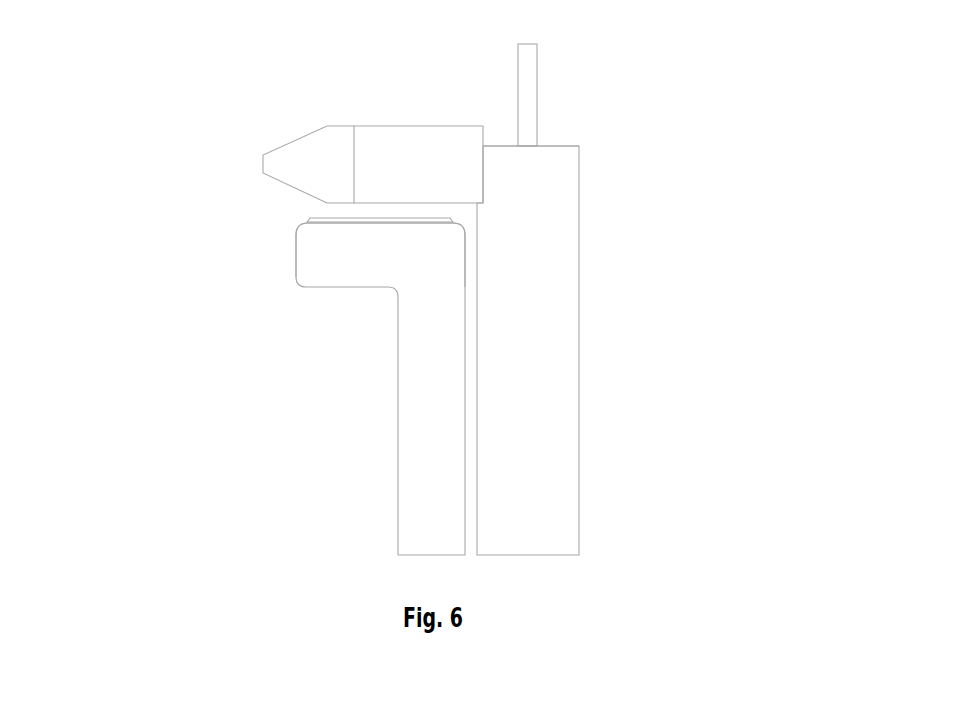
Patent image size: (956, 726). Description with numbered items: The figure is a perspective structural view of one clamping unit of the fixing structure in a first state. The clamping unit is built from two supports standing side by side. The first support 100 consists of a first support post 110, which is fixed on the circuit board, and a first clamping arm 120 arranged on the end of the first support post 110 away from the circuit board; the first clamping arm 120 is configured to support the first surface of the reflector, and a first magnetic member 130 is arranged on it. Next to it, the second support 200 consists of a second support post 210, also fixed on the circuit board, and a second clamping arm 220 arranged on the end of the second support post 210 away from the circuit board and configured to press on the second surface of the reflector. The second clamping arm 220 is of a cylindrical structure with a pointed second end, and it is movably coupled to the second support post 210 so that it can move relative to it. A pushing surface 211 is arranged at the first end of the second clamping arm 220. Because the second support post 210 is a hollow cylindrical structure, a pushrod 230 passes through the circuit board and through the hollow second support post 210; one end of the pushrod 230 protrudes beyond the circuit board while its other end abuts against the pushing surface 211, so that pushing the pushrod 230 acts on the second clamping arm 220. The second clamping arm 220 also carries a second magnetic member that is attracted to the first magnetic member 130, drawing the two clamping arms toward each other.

The first support 100 is at (257, 360).
The first support post 110 is at (428, 442).
The first clamping arm 120 is at (320, 273).
The first magnetic member 130 is at (294, 194).
The second support 200 is at (541, 284).
The second support post 210 is at (537, 362).
The pushing surface 211 is at (483, 133).
The second clamping arm 220 is at (416, 203).
The pushrod 230 is at (518, 100).